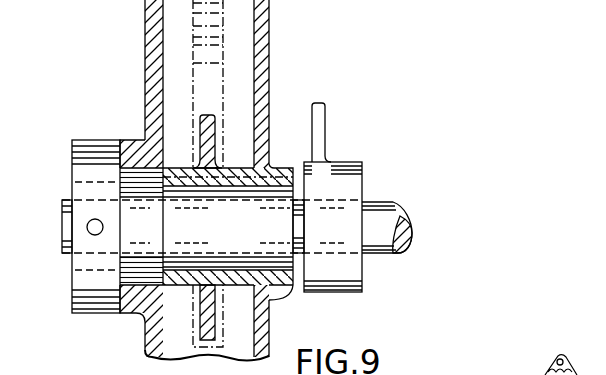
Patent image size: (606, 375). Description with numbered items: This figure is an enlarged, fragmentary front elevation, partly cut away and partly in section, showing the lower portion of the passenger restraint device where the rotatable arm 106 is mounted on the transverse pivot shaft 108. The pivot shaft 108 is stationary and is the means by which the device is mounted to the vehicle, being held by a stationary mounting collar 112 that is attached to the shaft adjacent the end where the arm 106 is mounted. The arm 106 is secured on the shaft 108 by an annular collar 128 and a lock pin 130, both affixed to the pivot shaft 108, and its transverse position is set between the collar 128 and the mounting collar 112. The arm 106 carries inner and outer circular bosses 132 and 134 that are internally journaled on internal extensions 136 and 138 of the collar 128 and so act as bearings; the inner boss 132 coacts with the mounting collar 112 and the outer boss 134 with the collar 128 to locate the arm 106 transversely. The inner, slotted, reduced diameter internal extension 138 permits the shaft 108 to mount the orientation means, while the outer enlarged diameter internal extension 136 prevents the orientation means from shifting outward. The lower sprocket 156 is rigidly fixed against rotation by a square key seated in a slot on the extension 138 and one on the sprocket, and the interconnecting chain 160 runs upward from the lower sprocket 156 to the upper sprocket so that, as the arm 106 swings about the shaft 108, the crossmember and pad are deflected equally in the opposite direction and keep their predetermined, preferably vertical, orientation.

The rotatable arm 106 is at (272, 57).
The pivot shaft 108 is at (379, 197).
The mounting collar 112 is at (340, 163).
The annular collar 128 is at (92, 165).
The lock pin 130 is at (87, 226).
The inner circular boss 132 is at (284, 293).
The outer circular boss 134 is at (140, 140).
The outer enlarged diameter internal extension 136 is at (135, 265).
The inner slotted reduced diameter internal extension 138 is at (268, 212).
The lower sprocket 156 is at (203, 312).
The interconnecting chain 160 is at (221, 26).